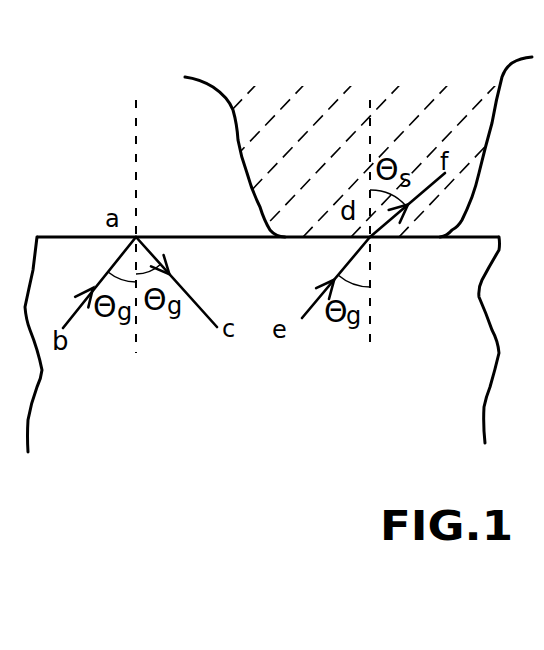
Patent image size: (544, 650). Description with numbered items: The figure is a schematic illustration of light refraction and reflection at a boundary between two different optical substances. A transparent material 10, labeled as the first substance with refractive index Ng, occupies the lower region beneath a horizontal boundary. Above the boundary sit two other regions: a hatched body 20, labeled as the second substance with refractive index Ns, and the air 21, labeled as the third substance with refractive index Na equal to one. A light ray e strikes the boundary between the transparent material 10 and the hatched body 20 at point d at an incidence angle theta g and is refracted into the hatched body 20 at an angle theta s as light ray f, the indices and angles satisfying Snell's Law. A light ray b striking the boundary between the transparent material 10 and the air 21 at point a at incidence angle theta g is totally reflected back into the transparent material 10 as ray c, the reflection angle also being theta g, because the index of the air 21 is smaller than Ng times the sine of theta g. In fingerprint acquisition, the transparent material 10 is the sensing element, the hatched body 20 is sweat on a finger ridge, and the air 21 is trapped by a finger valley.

The glass substrate 10 is at (203, 430).
The high refractive index layer 20 is at (314, 118).
The air 21 is at (40, 169).